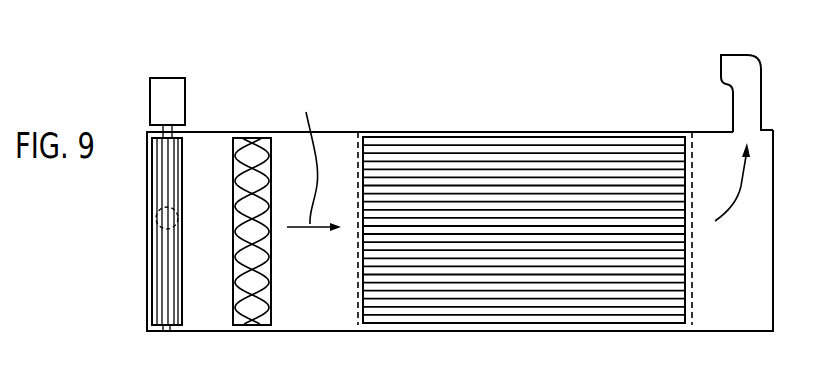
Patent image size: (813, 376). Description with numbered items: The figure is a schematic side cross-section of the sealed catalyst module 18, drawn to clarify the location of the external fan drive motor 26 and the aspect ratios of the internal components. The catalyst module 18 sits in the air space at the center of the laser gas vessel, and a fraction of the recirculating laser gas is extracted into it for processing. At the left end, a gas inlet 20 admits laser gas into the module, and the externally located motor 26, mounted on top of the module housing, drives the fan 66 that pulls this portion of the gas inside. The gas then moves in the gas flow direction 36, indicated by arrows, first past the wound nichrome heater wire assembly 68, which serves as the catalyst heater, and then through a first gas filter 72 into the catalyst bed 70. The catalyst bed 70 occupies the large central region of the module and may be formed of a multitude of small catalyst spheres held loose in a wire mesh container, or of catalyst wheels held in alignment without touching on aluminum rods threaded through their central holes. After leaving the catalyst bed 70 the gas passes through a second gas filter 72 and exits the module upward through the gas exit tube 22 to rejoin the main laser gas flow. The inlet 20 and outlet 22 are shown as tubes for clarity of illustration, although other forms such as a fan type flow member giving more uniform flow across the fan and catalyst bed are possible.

The catalyst module 18 is at (418, 131).
The inlet gas tube 20 is at (172, 222).
The gas exit tube 22 is at (736, 55).
The motor 26 is at (185, 100).
The gas flow direction 36 is at (792, 202).
The fan 66 is at (158, 296).
The wound nichrome heater wire assembly 68 is at (252, 152).
The catalyst bed 70 is at (527, 156).
The gas filter 72 is at (356, 308).